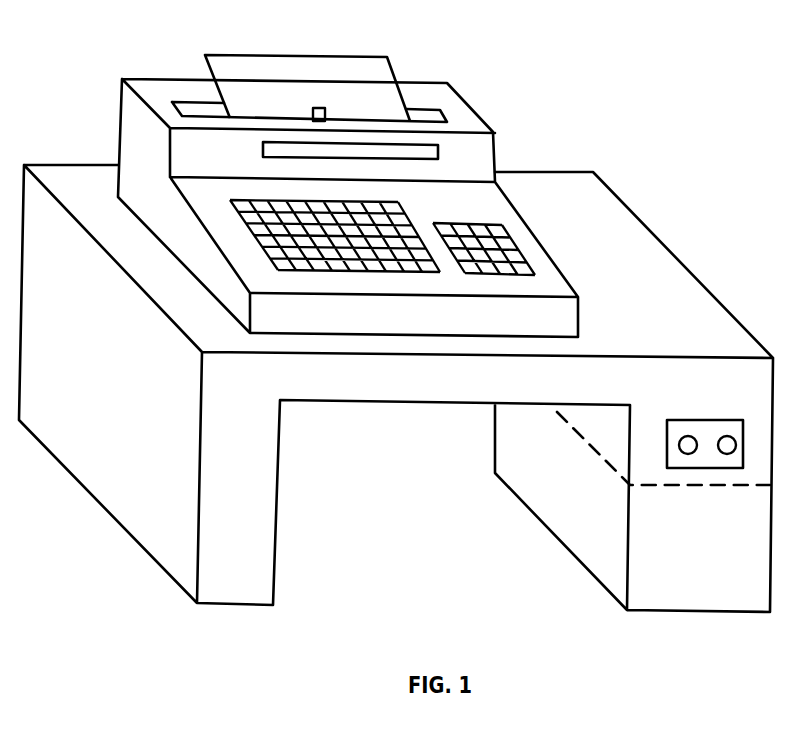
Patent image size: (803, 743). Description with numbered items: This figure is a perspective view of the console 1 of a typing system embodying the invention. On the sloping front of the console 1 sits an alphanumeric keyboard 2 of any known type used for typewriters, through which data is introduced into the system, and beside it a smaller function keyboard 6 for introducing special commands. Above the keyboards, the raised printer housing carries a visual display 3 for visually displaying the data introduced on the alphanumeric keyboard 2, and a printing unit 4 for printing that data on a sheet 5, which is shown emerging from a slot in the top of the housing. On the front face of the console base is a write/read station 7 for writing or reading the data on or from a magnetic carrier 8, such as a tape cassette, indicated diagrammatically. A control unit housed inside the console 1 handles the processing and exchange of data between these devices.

The console 1 is at (608, 160).
The alphanumeric keyboard 2 is at (400, 220).
The visual display 3 is at (438, 150).
The printing unit 4 is at (322, 107).
The sheet 5 is at (382, 70).
The function keyboard 6 is at (527, 268).
The write/read station 7 is at (690, 420).
The magnetic carrier 8 is at (690, 437).